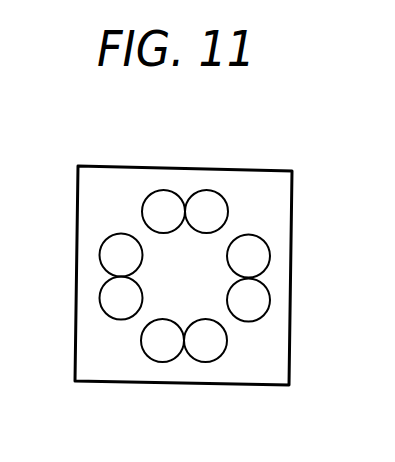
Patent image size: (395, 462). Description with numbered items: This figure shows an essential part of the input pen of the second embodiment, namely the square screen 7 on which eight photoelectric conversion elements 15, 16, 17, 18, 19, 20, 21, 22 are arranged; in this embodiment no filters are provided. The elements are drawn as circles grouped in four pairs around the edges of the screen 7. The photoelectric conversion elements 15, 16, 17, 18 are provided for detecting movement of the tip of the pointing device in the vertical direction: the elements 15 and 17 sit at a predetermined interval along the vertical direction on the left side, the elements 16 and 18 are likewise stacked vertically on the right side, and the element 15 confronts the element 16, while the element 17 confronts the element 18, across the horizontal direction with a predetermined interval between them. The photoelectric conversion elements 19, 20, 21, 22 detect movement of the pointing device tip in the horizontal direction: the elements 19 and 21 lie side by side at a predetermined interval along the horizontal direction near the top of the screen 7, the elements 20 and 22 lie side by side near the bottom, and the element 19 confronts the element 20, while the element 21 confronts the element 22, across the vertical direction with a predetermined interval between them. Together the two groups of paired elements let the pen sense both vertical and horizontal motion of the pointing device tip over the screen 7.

The screen 7 is at (292, 199).
The photoelectric conversion element 15 is at (100, 253).
The photoelectric conversion element 16 is at (270, 257).
The photoelectric conversion element 17 is at (100, 296).
The photoelectric conversion element 18 is at (270, 300).
The photoelectric conversion element 19 is at (163, 190).
The photoelectric conversion element 20 is at (158, 362).
The photoelectric conversion element 21 is at (205, 190).
The photoelectric conversion element 22 is at (210, 365).